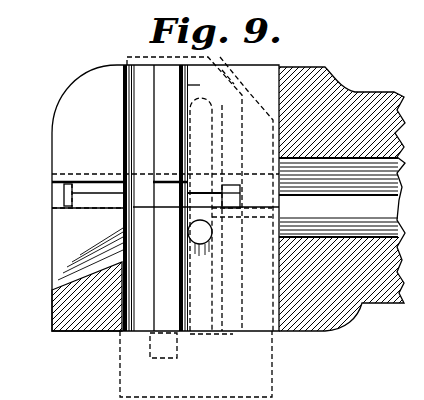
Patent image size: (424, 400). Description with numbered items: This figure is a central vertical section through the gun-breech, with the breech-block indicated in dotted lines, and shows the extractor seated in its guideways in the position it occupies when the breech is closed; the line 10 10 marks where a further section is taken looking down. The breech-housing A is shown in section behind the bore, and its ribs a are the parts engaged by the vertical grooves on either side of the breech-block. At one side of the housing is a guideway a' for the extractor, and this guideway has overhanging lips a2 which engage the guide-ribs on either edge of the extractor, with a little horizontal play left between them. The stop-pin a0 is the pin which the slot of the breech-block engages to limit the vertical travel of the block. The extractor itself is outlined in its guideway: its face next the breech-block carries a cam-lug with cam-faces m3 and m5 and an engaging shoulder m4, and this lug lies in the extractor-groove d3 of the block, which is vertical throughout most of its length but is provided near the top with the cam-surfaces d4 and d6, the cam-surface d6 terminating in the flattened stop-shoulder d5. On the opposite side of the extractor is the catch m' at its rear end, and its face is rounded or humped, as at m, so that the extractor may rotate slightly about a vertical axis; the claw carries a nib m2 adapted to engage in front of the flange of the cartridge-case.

The section line 10 is at (62, 192).
The breech-housing A is at (352, 92).
The ribs a is at (165, 198).
The guideway a' is at (50, 208).
The overhanging lips a2 is at (64, 207).
The stop-pin a0 is at (202, 244).
The humped face of extractor m is at (238, 209).
The catch m' is at (96, 273).
The nib m2 is at (226, 184).
The cam-face m3 is at (228, 190).
The engaging shoulder m4 is at (231, 208).
The cam-face m5 is at (182, 196).
The extractor-groove d3 is at (243, 307).
The cam-face d4 is at (217, 105).
The flattened shoulder d5 is at (200, 85).
The cam-face d6 is at (233, 95).